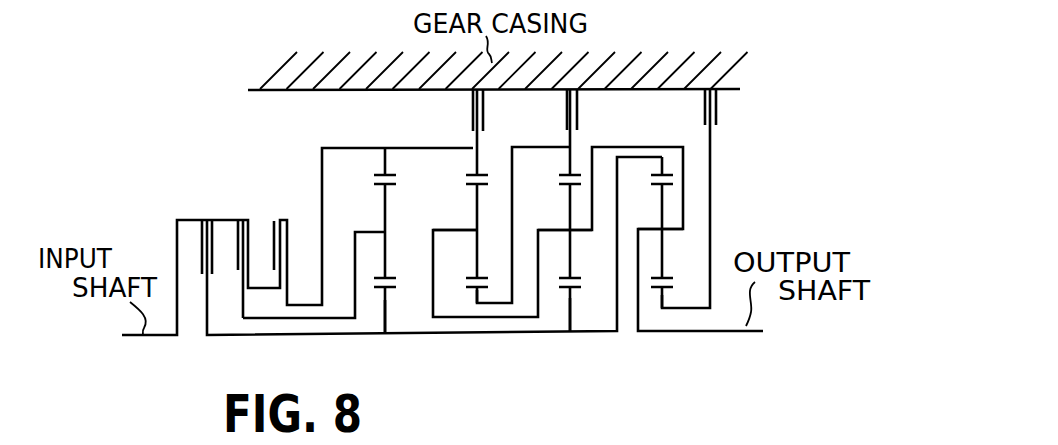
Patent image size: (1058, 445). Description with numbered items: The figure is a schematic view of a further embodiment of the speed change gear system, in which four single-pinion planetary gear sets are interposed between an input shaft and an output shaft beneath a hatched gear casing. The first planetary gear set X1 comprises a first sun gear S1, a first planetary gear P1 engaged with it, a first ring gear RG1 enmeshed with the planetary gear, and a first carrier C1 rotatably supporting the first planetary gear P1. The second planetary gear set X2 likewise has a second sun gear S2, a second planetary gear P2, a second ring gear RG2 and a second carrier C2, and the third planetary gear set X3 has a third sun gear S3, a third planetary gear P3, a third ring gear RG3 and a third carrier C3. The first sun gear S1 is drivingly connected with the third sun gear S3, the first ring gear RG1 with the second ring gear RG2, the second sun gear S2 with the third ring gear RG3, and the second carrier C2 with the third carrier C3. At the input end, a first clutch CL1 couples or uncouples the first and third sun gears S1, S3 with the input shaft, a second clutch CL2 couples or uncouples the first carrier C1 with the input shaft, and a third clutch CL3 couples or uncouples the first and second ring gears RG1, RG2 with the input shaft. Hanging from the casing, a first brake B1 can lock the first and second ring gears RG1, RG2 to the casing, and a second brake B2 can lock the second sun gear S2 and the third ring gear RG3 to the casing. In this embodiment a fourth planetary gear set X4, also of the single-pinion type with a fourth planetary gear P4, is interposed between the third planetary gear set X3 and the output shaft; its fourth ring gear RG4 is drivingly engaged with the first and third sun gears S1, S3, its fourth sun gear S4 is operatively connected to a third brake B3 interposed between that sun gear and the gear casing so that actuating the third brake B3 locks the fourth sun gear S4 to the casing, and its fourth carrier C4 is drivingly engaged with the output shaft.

The first clutch CL1 is at (218, 220).
The second clutch CL2 is at (259, 225).
The third clutch CL3 is at (298, 228).
The first brake B1 is at (486, 108).
The second brake B2 is at (579, 106).
The third brake B3 is at (718, 107).
The first ring gear RG1 is at (388, 163).
The second ring gear RG2 is at (478, 163).
The third ring gear RG3 is at (570, 164).
The fourth ring gear RG4 is at (662, 165).
The first carrier C1 is at (388, 231).
The second carrier C2 is at (478, 229).
The third carrier C3 is at (561, 228).
The fourth carrier C4 is at (650, 229).
The first planetary gear P1 is at (388, 262).
The second planetary gear P2 is at (478, 252).
The third planetary gear P3 is at (573, 258).
The fourth planetary gear P4 is at (665, 258).
The first sun gear S1 is at (388, 318).
The second sun gear S2 is at (477, 297).
The third sun gear S3 is at (573, 310).
The fourth sun gear S4 is at (665, 296).
The first planetary gear set X1 is at (381, 312).
The second planetary gear set X2 is at (488, 295).
The third planetary gear set X3 is at (562, 312).
The fourth planetary gear set X4 is at (652, 305).